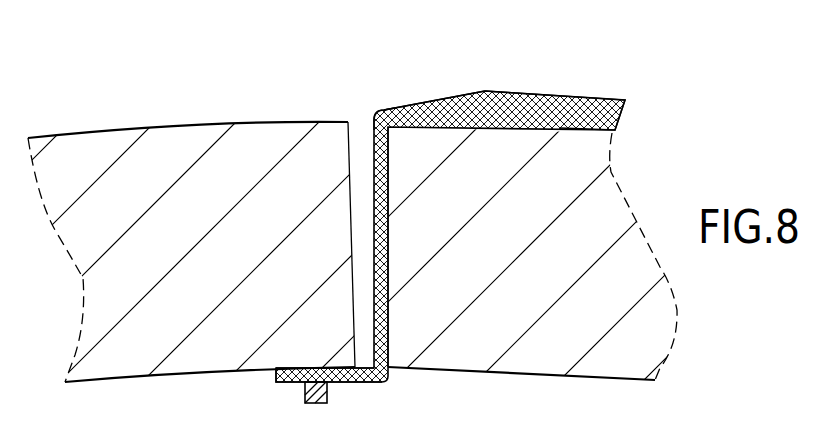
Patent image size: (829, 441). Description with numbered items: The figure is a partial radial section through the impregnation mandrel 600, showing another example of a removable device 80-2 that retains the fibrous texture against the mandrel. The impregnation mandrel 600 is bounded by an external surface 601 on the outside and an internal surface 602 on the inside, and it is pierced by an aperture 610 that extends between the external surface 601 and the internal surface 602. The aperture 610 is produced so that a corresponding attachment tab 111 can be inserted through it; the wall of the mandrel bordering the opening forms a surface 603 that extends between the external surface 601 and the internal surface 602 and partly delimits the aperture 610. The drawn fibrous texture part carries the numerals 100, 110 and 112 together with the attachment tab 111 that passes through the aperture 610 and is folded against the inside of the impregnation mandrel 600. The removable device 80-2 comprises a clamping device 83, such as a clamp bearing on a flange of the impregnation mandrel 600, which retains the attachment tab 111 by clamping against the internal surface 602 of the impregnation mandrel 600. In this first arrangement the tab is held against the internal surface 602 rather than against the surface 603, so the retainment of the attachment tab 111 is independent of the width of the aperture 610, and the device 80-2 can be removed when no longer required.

The impregnation mandrel 600 is at (195, 229).
The external surface 601 is at (97, 130).
The internal surface 602 is at (122, 382).
The surface 603 is at (389, 232).
The aperture 610 is at (362, 122).
The removable device 80-2 is at (370, 398).
The cover lip 100 is at (583, 100).
The corner portion 110 is at (387, 96).
The upper leg 112 is at (424, 102).
The attachment tab 111 is at (277, 373).
The clamping device 83 is at (318, 402).